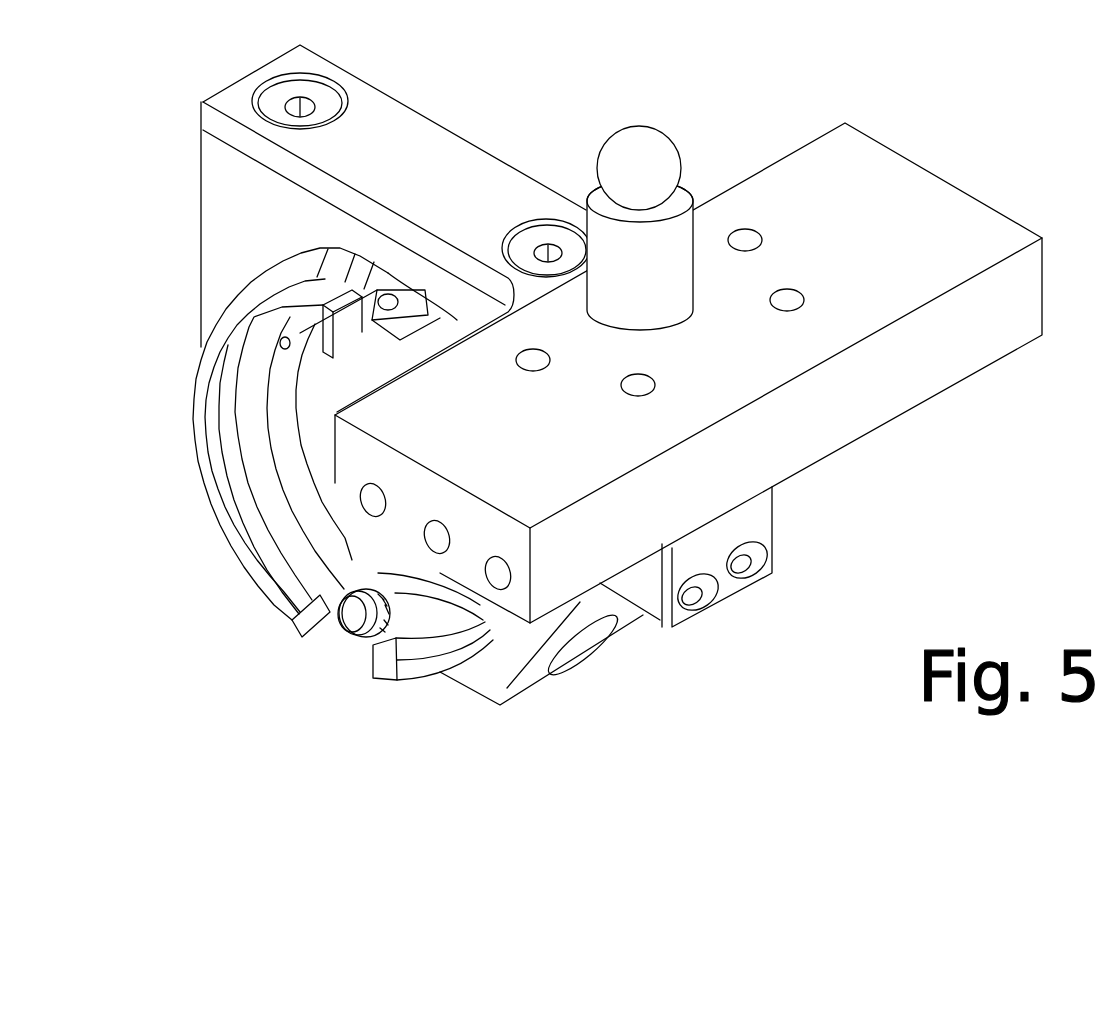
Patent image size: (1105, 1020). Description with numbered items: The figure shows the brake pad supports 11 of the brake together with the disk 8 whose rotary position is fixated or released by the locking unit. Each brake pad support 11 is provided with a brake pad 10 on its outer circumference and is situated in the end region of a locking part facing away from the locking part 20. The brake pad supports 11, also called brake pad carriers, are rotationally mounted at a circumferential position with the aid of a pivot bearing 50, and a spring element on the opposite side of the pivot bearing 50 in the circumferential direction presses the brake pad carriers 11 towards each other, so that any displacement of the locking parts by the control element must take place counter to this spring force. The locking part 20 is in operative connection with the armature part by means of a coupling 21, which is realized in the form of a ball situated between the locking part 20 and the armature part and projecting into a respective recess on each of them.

The disk 8 is at (970, 343).
The brake pad 10 is at (215, 515).
The brake pad support 11 is at (268, 555).
The locking part 20 is at (676, 247).
The coupling 21 is at (640, 155).
The pivot bearing 50 is at (348, 617).